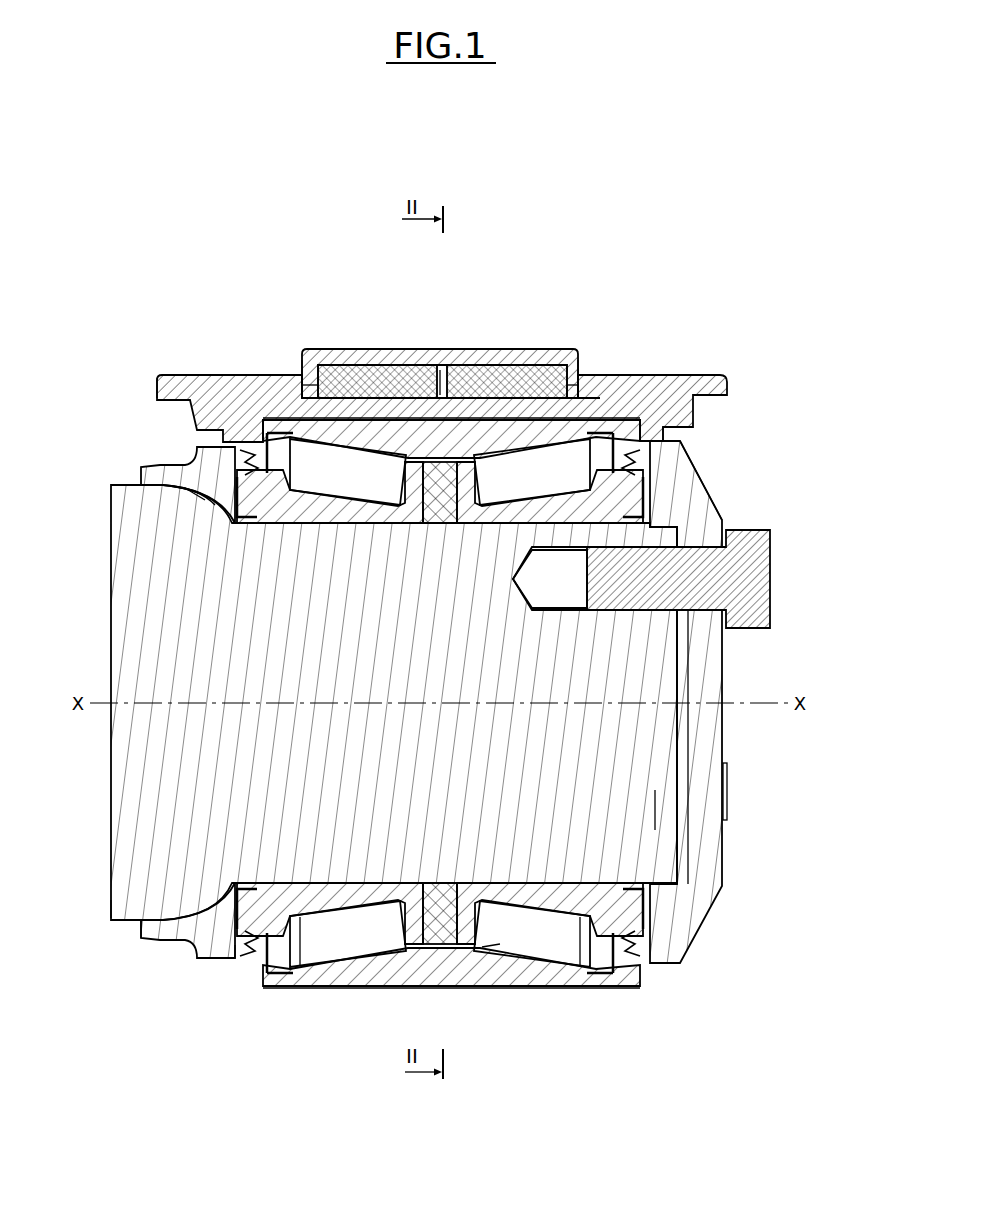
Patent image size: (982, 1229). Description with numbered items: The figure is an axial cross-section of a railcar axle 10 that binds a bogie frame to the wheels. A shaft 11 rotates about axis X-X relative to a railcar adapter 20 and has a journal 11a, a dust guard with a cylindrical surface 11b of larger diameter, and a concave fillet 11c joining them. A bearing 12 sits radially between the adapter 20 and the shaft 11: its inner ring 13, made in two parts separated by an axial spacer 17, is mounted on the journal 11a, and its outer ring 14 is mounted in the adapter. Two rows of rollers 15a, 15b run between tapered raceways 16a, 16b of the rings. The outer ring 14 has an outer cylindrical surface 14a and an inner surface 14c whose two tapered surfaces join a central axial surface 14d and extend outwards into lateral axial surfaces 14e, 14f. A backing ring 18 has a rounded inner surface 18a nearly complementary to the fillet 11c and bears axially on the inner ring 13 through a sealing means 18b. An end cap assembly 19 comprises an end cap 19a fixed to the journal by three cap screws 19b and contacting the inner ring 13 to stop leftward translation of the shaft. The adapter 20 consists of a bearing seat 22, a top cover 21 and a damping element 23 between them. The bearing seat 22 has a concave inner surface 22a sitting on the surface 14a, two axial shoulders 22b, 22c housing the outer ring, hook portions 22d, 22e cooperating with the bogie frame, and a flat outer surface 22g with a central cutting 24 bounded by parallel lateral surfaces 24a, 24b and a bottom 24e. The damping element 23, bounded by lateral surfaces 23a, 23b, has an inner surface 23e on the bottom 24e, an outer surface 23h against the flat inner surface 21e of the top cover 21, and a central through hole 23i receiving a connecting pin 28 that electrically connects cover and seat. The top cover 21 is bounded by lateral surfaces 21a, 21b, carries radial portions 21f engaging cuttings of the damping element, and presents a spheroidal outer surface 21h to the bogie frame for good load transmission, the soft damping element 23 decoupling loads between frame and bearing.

The railcar axle 10 is at (150, 1002).
The shaft 11 is at (96, 857).
The journal 11a is at (655, 811).
The cylindrical surface 11b is at (117, 903).
The concave fillet 11c is at (188, 492).
The bearing 12 is at (640, 982).
The inner ring 13 is at (315, 900).
The outer ring 14 is at (580, 984).
The outer cylindrical surface 14a is at (285, 420).
The inner surface 14c is at (487, 936).
The central axial surface 14d is at (428, 465).
The lateral axial surface 14e is at (245, 438).
The lateral axial surface 14f is at (636, 443).
The rolling elements 15a is at (348, 472).
The rolling elements 15b is at (532, 472).
The tapered raceway 16a is at (355, 936).
The tapered raceway 16b is at (375, 930).
The axial spacer 17 is at (440, 895).
The backing ring 18 is at (172, 468).
The inner surface 18a is at (188, 495).
The sealing means 18b is at (228, 958).
The end cap assembly 19 is at (766, 656).
The end cap 19a is at (707, 492).
The cap screws 19b is at (769, 575).
The railcar adapter 20 is at (106, 383).
The top cover 21 is at (412, 340).
The third lateral surface 21a is at (585, 378).
The third lateral surface 21b is at (298, 372).
The inner surface 21e is at (405, 370).
The radial portion 21f is at (303, 370).
The outer surface 21h is at (480, 372).
The bearing seat 22 is at (772, 381).
The inner surface 22a is at (662, 441).
The axial shoulder 22b is at (240, 440).
The axial shoulder 22c is at (664, 430).
The hook portion 22d is at (180, 383).
The hook portion 22e is at (718, 397).
The flat outer surface 22g is at (717, 373).
The damping element 23 is at (371, 384).
The second lateral surface 23a is at (550, 372).
The second lateral surface 23b is at (334, 372).
The inner surface 23e is at (355, 370).
The outer surface 23h is at (503, 372).
The through hole 23i is at (441, 372).
The central cutting 24 is at (606, 385).
The first lateral surface 24a is at (300, 383).
The first lateral surface 24b is at (582, 390).
The bottom 24e is at (528, 372).
The connecting pin 28 is at (438, 380).